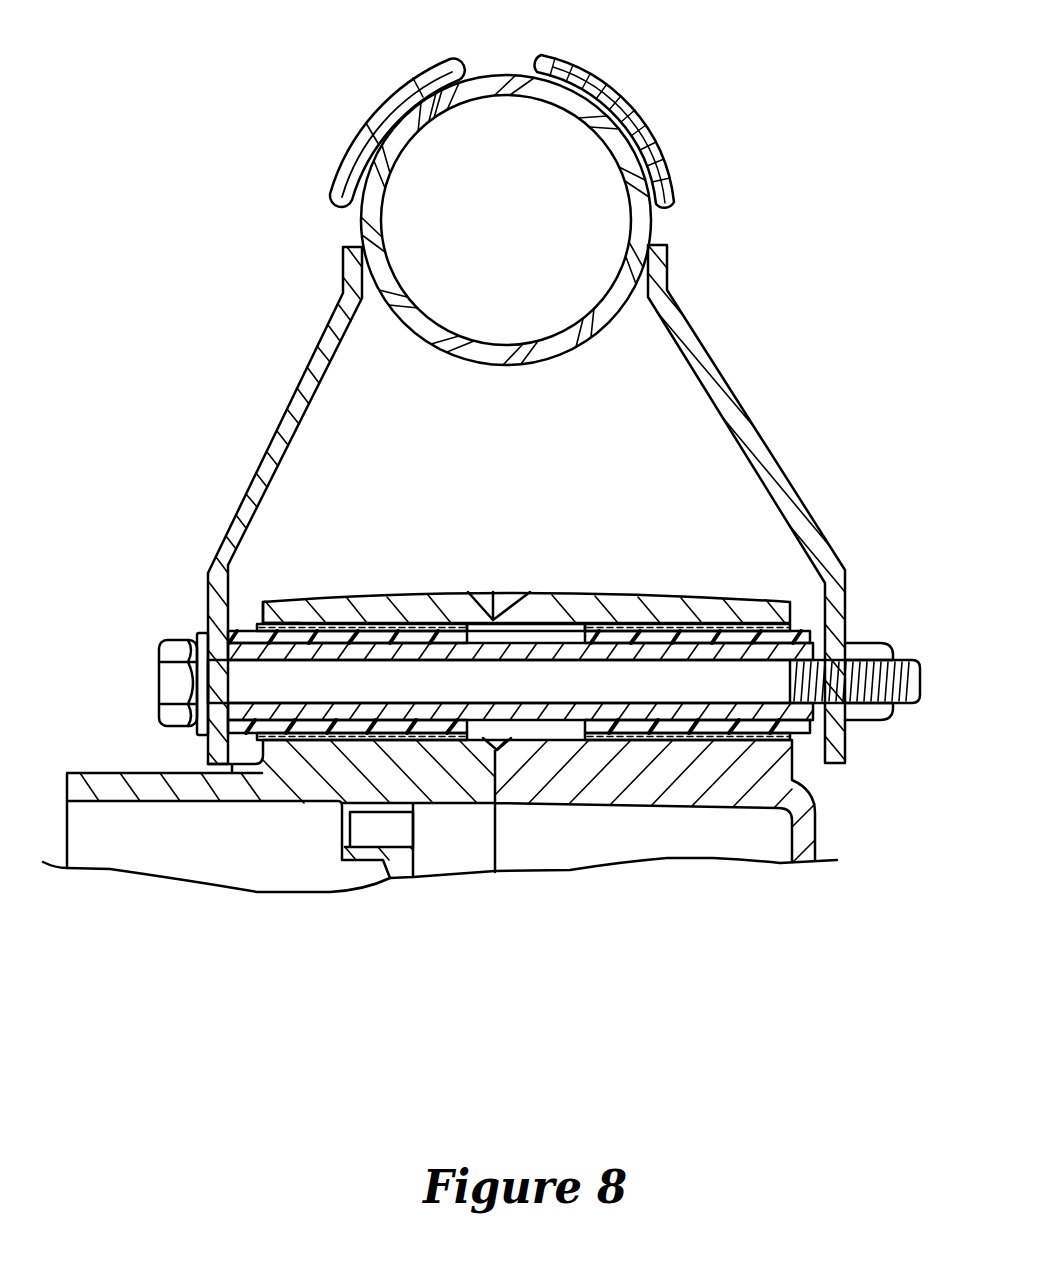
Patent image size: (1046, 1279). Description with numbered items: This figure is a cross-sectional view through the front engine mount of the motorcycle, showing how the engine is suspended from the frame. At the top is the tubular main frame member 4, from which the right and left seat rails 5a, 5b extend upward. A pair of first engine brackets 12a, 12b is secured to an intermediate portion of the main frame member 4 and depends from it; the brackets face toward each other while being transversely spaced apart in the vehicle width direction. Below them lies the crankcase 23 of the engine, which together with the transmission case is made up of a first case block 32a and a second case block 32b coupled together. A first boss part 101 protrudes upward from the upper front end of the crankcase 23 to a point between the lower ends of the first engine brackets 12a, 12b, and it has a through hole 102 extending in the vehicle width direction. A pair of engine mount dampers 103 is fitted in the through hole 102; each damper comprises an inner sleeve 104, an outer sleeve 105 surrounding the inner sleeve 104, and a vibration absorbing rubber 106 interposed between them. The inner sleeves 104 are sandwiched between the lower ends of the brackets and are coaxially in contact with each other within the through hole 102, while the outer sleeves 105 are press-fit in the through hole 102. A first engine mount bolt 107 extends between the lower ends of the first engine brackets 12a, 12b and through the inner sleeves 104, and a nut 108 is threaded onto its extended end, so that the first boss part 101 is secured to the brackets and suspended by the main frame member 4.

The main frame member 4 is at (517, 358).
The right seat rail 5a is at (392, 100).
The left seat rail 5b is at (620, 100).
The first engine bracket 12a is at (293, 403).
The first engine bracket 12b is at (737, 402).
The crankcase 23 is at (620, 997).
The first case block 32a is at (398, 866).
The second case block 32b is at (573, 783).
The first boss part 101 is at (522, 594).
The through hole 102 is at (550, 632).
The engine mount damper 103 is at (332, 626).
The inner sleeve 104 is at (423, 637).
The outer sleeve 105 is at (307, 743).
The vibration absorbing rubber 106 is at (283, 604).
The first engine mount bolt 107 is at (177, 683).
The nut 108 is at (880, 652).